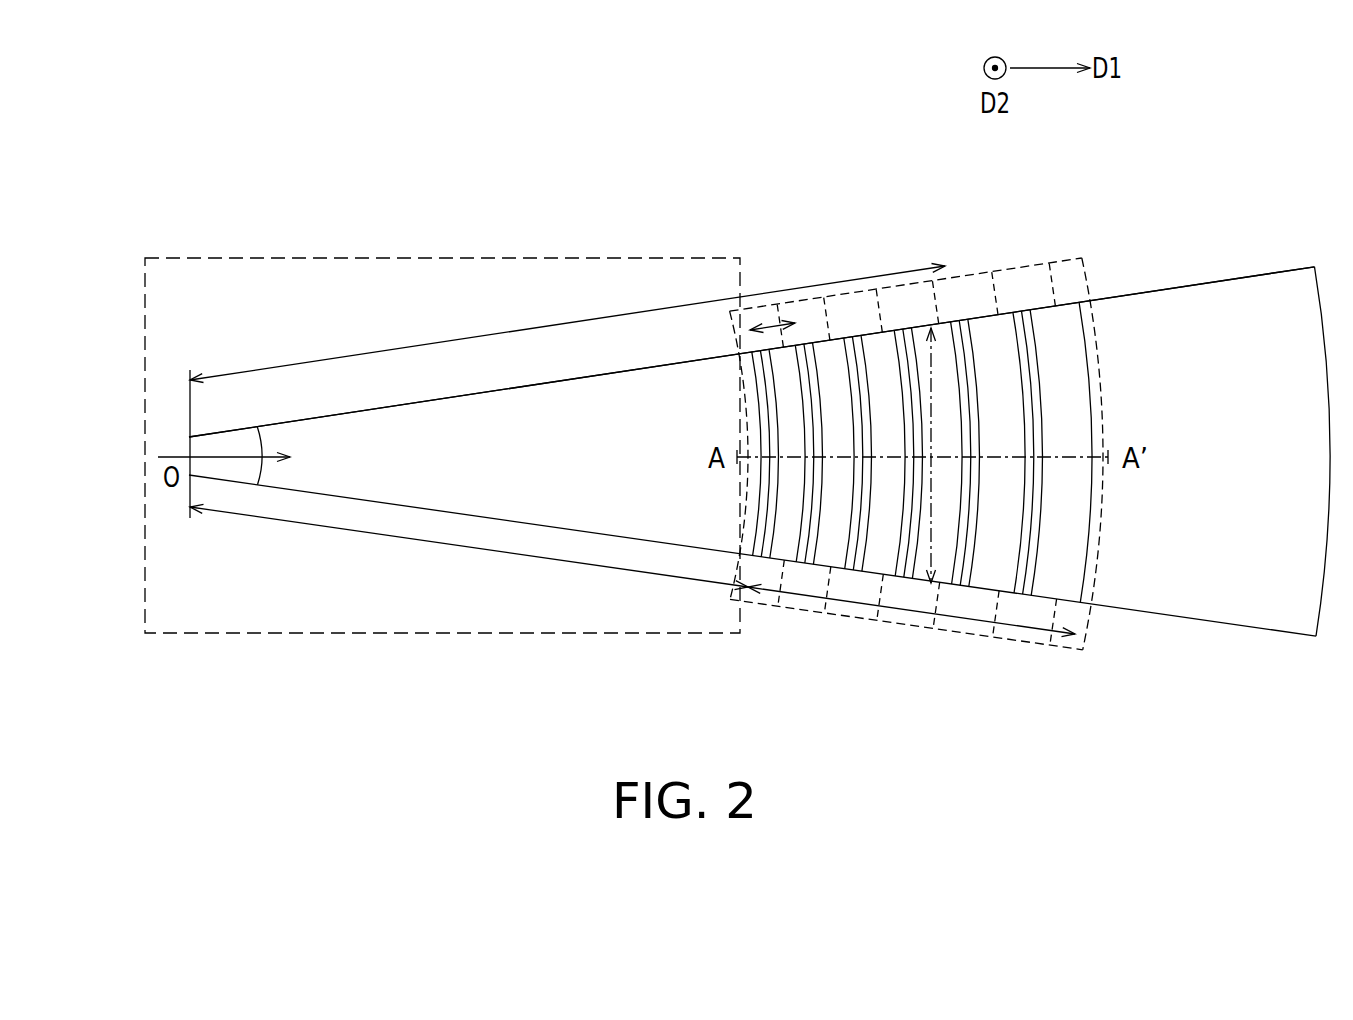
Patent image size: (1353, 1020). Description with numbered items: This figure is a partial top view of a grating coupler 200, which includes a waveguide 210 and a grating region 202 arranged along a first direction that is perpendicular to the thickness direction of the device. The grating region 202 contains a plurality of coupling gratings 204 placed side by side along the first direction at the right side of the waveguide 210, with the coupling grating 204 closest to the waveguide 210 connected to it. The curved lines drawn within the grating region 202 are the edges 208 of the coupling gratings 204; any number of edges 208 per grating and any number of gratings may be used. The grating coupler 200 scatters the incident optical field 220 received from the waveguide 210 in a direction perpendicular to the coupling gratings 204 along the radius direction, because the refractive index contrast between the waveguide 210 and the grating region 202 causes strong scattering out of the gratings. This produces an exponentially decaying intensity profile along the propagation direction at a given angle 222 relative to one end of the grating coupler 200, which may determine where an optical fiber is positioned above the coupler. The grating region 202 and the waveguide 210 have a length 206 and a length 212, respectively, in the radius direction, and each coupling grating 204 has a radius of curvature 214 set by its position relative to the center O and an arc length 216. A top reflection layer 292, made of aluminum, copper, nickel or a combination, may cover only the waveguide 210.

The grating coupler 200 is at (172, 203).
The top reflection layer 292 is at (424, 256).
The grating region 202 is at (1015, 645).
The coupling gratings 204 is at (767, 323).
The length of grating region 206 is at (917, 612).
The edges 208 is at (1084, 325).
The waveguide 210 is at (477, 413).
The length of waveguide 212 is at (468, 548).
The radius of curvature 214 is at (577, 318).
The arc length 216 is at (933, 373).
The incident optical field 220 is at (172, 456).
The angle 222 is at (262, 438).